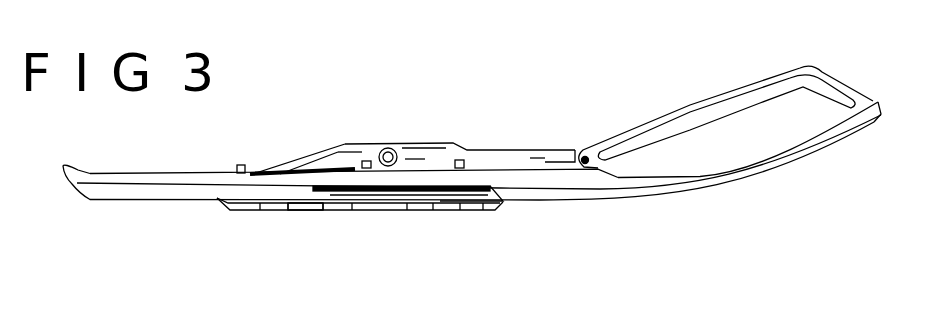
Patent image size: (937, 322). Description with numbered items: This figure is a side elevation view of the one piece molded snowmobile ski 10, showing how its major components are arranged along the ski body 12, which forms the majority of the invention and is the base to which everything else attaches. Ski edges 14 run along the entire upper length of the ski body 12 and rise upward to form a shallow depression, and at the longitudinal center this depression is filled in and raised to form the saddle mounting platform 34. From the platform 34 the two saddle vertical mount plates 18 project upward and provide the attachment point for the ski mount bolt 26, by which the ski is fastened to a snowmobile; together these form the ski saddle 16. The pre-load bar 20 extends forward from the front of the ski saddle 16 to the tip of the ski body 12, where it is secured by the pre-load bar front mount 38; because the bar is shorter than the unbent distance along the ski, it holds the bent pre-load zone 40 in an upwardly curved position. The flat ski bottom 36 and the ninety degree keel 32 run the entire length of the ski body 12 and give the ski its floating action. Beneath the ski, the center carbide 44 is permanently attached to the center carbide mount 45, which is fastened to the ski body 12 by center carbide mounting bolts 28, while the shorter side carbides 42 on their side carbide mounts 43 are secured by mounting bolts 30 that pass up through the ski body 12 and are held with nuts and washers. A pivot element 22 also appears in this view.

The one piece molded snowmobile ski 10 is at (345, 130).
The ski body 12 is at (150, 184).
The ski edges 14 is at (200, 180).
The ski saddle 16 is at (505, 138).
The saddle vertical mount plates 18 is at (549, 150).
The pre-load bar 20 is at (702, 101).
The pivot pin 22 is at (578, 155).
The ski mount bolt 26 is at (388, 146).
The center carbide mounting bolts 28 is at (234, 163).
The mounting bolts 30 is at (459, 158).
The ninety degree keel 32 is at (778, 182).
The saddle mounting platform 34 is at (348, 171).
The flat ski bottom 36 is at (632, 190).
The pre-load bar front mount 38 is at (873, 97).
The pre-load zone 40 is at (714, 178).
The side carbides 42 is at (417, 197).
The side carbide mounts 43 is at (488, 194).
The center carbide 44 is at (260, 213).
The center carbide mount 45 is at (287, 213).